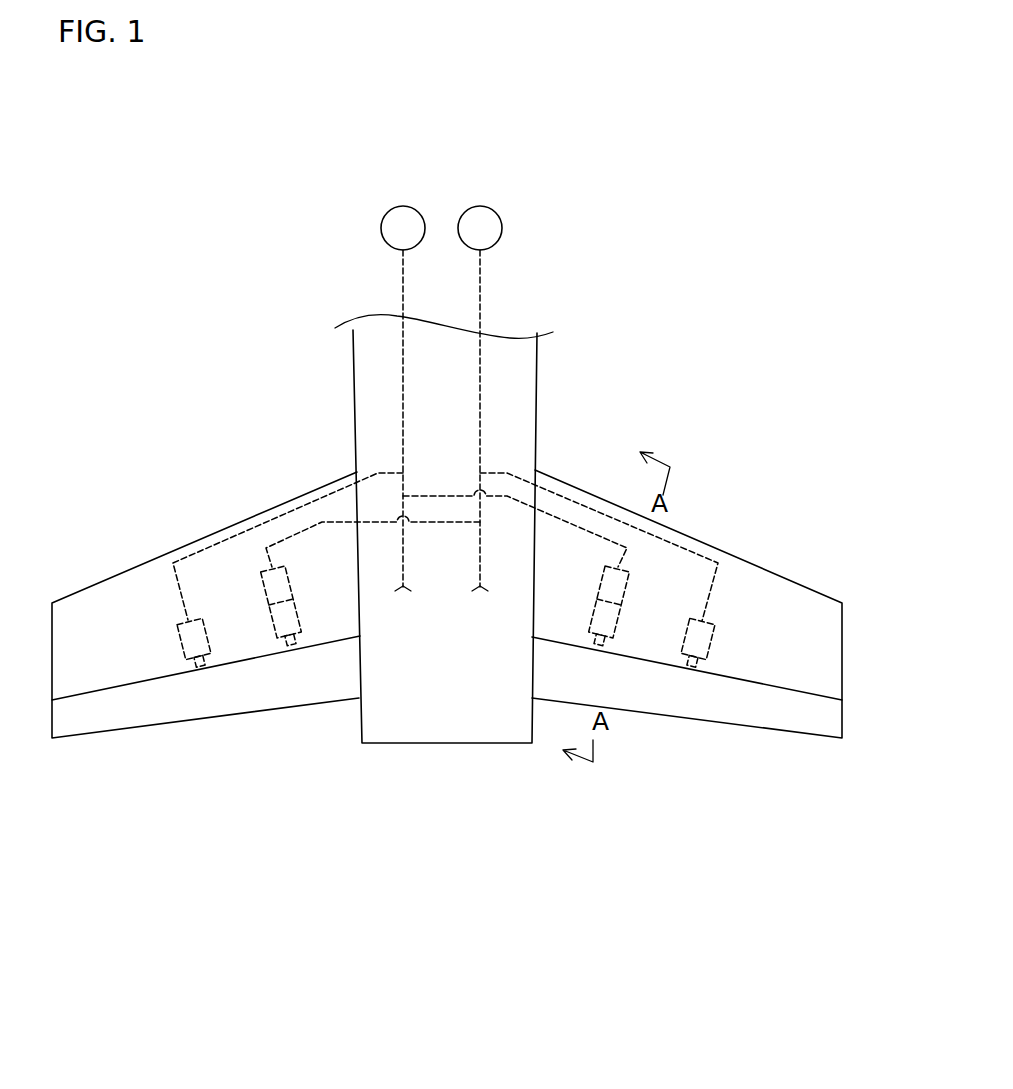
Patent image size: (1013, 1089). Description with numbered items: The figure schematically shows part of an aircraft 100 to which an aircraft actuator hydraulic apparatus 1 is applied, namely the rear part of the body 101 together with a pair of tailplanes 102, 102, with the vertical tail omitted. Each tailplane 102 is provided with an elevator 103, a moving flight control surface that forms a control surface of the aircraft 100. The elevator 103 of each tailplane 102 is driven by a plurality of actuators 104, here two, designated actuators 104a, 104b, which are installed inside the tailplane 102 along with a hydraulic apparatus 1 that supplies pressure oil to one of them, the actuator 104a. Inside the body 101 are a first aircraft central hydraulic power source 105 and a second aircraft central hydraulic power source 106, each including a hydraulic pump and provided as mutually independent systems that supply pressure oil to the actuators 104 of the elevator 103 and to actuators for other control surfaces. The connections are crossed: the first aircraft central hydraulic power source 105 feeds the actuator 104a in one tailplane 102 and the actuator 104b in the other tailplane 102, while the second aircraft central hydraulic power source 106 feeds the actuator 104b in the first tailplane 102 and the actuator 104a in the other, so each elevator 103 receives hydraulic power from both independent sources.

The aircraft actuator hydraulic apparatus 1 is at (267, 587).
The aircraft 100 is at (557, 370).
The body 101 is at (518, 427).
The tailplane 102 is at (148, 590).
The elevator 103 is at (178, 707).
The actuator 104 is at (115, 439).
The actuator 104a is at (273, 627).
The actuator 104b is at (176, 640).
The first aircraft central hydraulic power source 105 is at (381, 231).
The second aircraft central hydraulic power source 106 is at (502, 226).